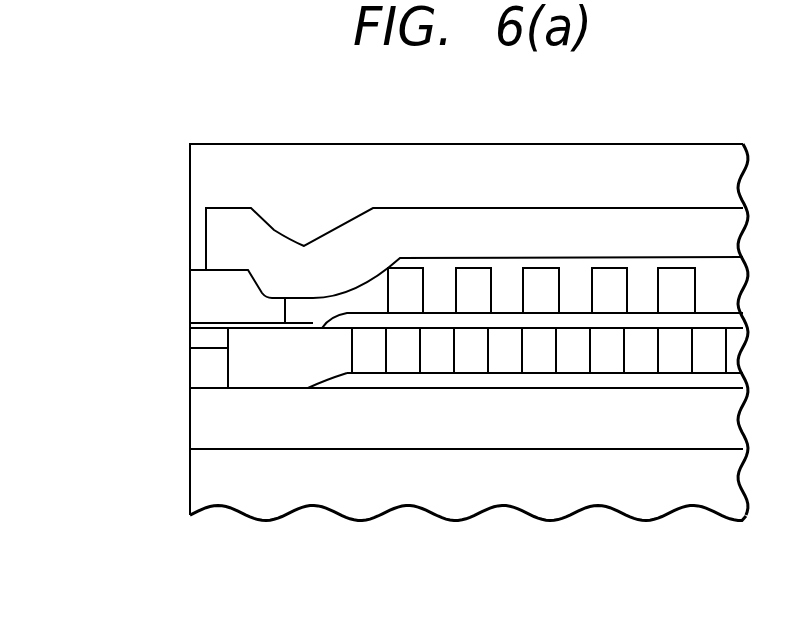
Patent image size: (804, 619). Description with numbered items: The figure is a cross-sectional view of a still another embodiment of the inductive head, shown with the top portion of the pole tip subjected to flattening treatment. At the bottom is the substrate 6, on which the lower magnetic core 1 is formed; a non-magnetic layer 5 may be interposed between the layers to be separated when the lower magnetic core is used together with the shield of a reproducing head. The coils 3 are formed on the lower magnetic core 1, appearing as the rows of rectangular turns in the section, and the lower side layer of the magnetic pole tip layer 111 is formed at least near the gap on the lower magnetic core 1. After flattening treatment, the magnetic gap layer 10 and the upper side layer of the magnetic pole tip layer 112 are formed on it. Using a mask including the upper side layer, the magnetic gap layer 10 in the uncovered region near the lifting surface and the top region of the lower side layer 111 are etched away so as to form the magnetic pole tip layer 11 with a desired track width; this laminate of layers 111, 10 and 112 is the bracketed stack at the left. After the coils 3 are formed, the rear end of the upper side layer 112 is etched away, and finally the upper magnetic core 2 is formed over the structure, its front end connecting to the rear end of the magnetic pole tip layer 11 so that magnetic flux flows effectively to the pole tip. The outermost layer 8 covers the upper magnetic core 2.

The upper insulating layer 8 is at (253, 158).
The upper magnetic core 2 is at (732, 232).
The coils 3 is at (760, 370).
The magnetic pole tip layer 11 is at (76, 363).
The upper side layer of the magnetic pole tip layer 112 is at (202, 297).
The magnetic gap layer 10 is at (197, 328).
The lower side layer of the magnetic pole tip layer 111 is at (202, 376).
The lower magnetic core 1 is at (202, 428).
The substrate 6 is at (202, 482).
The non-magnetic layer 5 is at (373, 382).